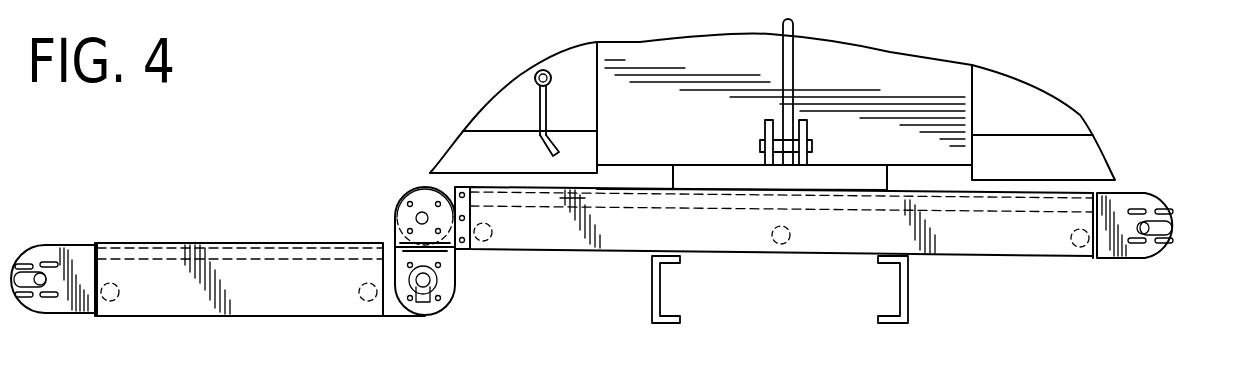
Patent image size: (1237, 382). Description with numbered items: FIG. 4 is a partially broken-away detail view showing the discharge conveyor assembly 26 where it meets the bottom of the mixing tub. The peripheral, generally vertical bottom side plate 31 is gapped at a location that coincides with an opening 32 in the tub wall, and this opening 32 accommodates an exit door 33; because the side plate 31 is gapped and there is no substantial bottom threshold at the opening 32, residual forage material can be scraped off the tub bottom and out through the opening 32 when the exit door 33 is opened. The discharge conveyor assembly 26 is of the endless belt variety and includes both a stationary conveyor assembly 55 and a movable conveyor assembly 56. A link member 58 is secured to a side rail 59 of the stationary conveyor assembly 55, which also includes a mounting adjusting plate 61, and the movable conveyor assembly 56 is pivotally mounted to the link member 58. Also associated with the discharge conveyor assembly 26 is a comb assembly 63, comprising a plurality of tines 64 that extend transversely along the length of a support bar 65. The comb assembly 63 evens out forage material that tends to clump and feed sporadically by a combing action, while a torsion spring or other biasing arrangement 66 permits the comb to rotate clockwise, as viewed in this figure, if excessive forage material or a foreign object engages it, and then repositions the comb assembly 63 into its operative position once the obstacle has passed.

The discharge conveyor assembly 26 is at (605, 255).
The bottom side plate 31 is at (1077, 162).
The opening 32 is at (968, 103).
The exit door 33 is at (943, 68).
The stationary conveyor assembly 55 is at (1036, 246).
The movable conveyor assembly 56 is at (163, 242).
The link member 58 is at (455, 262).
The side rail 59 is at (602, 228).
The mounting adjusting plate 61 is at (33, 255).
The comb assembly 63 is at (545, 66).
The tines 64 is at (537, 118).
The support bar 65 is at (538, 72).
The biasing arrangement 66 is at (532, 93).